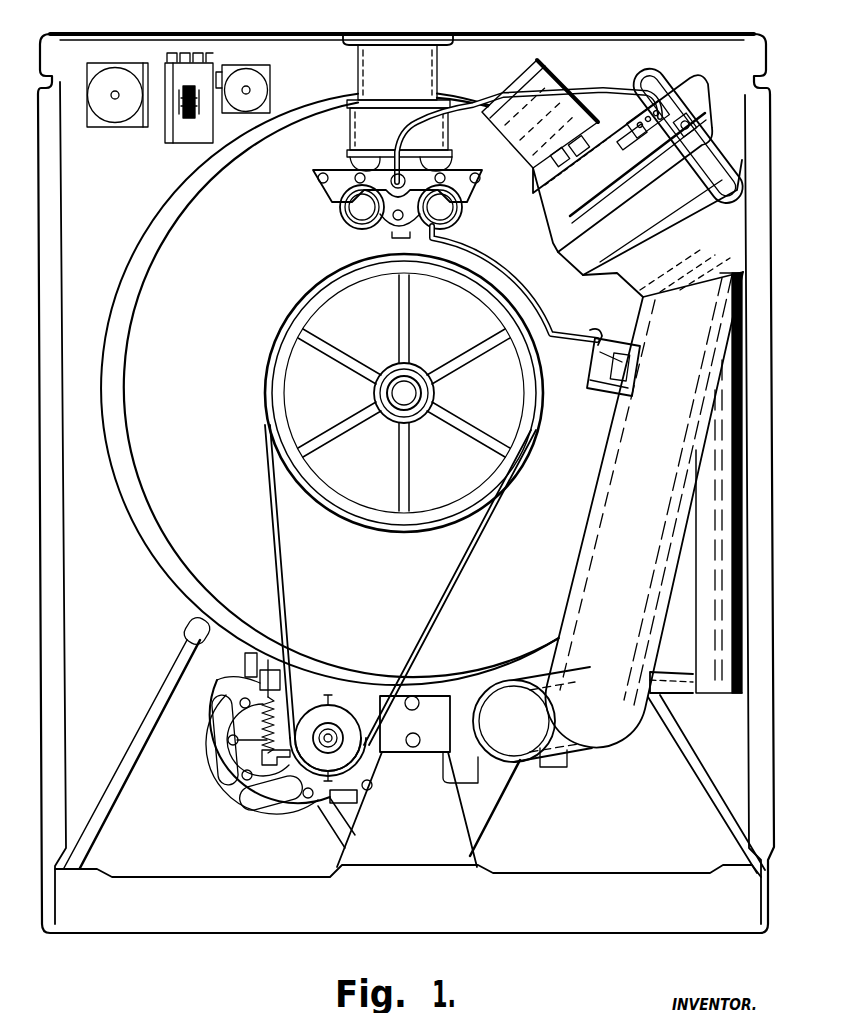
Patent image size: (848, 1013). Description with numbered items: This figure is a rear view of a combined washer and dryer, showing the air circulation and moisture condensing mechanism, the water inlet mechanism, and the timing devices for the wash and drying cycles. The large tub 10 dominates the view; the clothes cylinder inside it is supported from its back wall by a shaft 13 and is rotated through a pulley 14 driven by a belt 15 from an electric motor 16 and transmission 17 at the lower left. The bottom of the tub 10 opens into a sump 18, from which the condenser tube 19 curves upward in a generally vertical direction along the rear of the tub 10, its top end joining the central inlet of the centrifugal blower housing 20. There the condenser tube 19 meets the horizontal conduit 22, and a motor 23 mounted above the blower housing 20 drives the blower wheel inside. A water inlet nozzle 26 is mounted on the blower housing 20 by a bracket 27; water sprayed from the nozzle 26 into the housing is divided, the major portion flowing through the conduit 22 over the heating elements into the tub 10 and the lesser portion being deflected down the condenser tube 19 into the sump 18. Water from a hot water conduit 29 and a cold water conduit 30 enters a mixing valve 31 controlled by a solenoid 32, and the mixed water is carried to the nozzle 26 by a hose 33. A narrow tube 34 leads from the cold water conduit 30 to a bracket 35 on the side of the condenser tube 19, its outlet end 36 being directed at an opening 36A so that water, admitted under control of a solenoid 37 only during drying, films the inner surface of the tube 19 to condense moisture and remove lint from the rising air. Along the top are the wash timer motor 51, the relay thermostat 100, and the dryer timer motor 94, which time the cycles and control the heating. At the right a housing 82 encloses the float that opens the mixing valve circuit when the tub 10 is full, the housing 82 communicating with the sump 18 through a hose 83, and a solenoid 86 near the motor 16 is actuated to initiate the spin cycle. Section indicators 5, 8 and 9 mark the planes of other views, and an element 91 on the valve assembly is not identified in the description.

The section line 5- 5 is at (42, 954).
The section line 8- 8 is at (255, 127).
The section line 9- 9 is at (130, 143).
The tub 10 is at (160, 273).
The shaft 13 is at (406, 393).
The pulley 14 is at (395, 323).
The belt 15 is at (278, 522).
The electric motor 16 is at (202, 740).
The transmission 17 is at (242, 757).
The sump 18 is at (487, 755).
The condenser tube 19 is at (597, 542).
The blower housing 20 is at (693, 210).
The horizontal conduit 22 is at (655, 77).
The motor 23 is at (548, 62).
The nozzle 26 is at (660, 110).
The bracket 27 is at (640, 127).
The hot water conduit 29 is at (352, 208).
The cold water conduit 30 is at (443, 212).
The mixing valve 31 is at (387, 222).
The solenoid 32 is at (397, 100).
The hose 33 is at (463, 107).
The narrow tube 34 is at (540, 312).
The bracket 35 is at (597, 382).
The outlet end 36 is at (603, 325).
The opening 36A is at (627, 343).
The solenoid 37 is at (437, 103).
The motor 51 is at (97, 78).
The housing 82 is at (700, 628).
The hose 83 is at (653, 693).
The solenoid 86 is at (245, 663).
The valve inlet mount 91 is at (358, 100).
The dryer timer motor 94 is at (262, 88).
The relay thermostat 100 is at (166, 63).